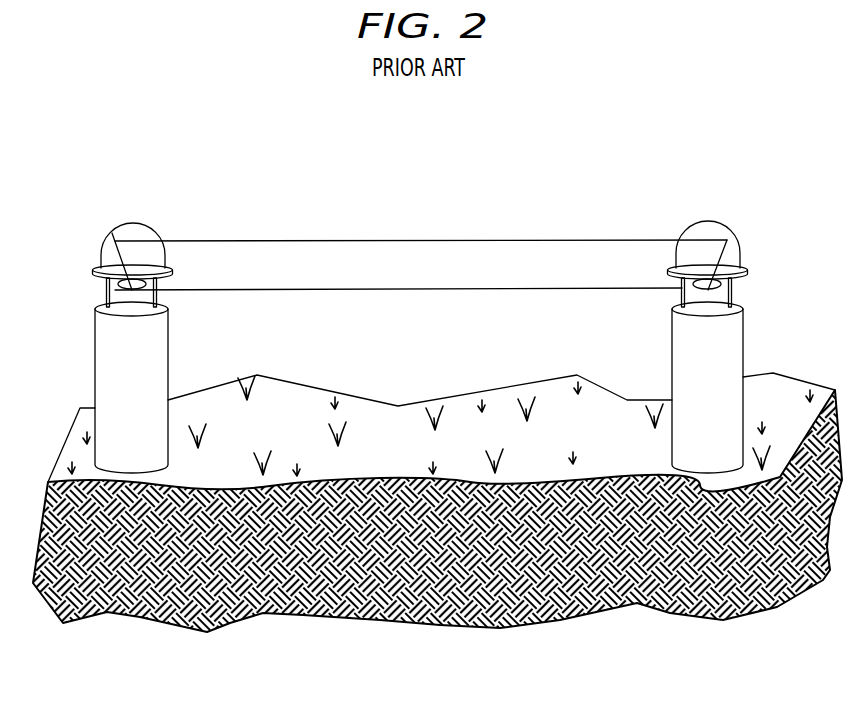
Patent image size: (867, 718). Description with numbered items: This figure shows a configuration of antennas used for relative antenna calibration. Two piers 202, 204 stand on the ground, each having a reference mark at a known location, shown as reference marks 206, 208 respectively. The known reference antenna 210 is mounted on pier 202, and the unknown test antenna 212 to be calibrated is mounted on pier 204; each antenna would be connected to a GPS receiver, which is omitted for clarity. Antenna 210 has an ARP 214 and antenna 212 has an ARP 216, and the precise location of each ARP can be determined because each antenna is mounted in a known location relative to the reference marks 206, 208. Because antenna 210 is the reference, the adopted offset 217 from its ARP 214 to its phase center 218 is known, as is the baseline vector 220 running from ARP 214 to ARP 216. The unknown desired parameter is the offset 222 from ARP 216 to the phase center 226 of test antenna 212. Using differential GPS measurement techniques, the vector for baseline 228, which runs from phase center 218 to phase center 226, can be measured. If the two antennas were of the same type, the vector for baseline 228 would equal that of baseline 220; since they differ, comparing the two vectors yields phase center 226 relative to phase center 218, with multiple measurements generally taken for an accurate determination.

The pier 202 is at (95, 352).
The pier 204 is at (745, 352).
The reference mark 206 is at (132, 307).
The reference mark 208 is at (708, 307).
The reference antenna 210 is at (153, 223).
The test antenna 212 is at (687, 223).
The ARP 214 is at (108, 288).
The ARP 216 is at (733, 288).
The adopted offset 217 is at (113, 261).
The phase center 218 is at (112, 233).
The baseline vector 220 is at (372, 289).
The offset 222 is at (730, 262).
The phase center 226 is at (727, 240).
The baseline 228 is at (372, 240).